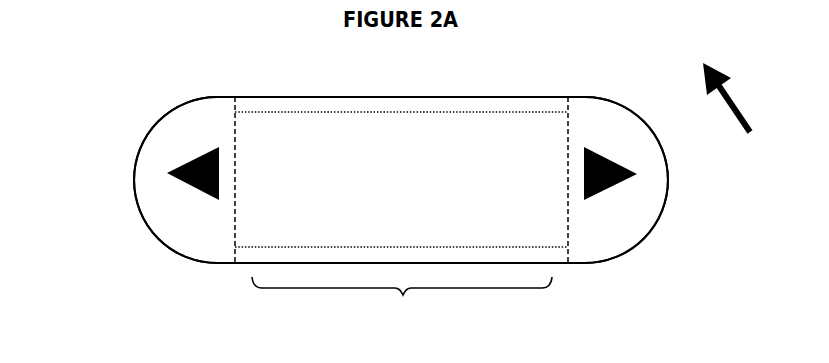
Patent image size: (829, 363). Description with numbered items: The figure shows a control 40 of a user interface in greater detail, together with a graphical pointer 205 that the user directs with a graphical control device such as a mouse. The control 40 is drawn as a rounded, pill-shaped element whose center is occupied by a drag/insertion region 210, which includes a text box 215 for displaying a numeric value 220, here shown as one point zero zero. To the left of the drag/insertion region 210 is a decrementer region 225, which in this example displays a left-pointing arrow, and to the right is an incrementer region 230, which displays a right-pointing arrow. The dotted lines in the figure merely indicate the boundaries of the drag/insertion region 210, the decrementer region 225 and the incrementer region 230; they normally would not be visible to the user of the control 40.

The control 40 is at (579, 50).
The graphical pointer 205 is at (747, 107).
The drag/insertion region 210 is at (401, 227).
The text box 215 is at (277, 113).
The numeric value 220 is at (461, 162).
The decrementer region 225 is at (143, 223).
The incrementer region 230 is at (667, 212).